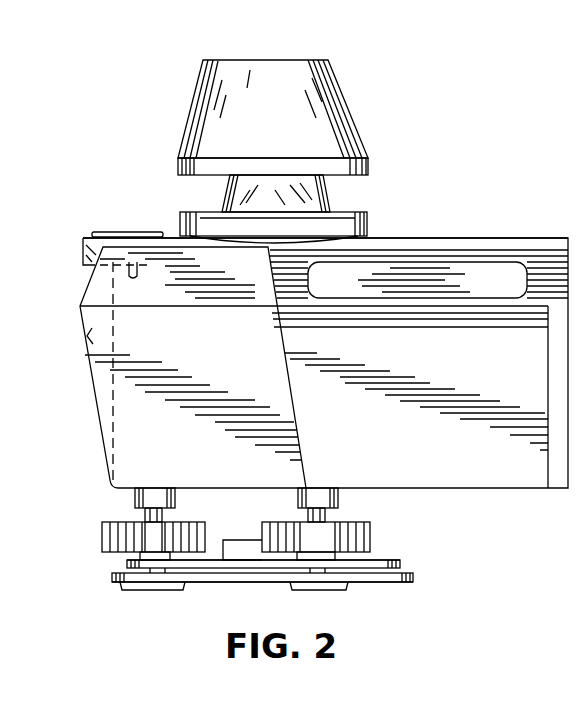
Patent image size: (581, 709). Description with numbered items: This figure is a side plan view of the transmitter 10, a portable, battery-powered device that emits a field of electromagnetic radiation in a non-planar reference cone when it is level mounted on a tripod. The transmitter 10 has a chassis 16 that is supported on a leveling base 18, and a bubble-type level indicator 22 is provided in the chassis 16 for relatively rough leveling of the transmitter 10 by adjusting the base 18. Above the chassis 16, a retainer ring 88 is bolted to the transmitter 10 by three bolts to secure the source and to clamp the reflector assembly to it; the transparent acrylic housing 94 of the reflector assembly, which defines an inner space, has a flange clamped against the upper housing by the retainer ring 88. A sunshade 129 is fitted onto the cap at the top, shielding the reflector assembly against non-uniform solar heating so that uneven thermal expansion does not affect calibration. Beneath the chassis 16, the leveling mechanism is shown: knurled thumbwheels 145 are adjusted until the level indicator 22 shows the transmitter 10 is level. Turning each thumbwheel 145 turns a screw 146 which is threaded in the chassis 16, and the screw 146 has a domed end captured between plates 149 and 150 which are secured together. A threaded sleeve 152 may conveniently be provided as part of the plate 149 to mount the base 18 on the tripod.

The transmitter 10 is at (497, 238).
The chassis 16 is at (549, 238).
The leveling base 18 is at (393, 558).
The bubble-type level indicator 22 is at (117, 235).
The retainer ring 88 is at (366, 224).
The housing 94 is at (326, 190).
The sunshade 129 is at (346, 103).
The knurled thumbwheel 145 is at (203, 514).
The screw 146 is at (145, 521).
The plate 149 is at (400, 564).
The plate 150 is at (413, 580).
The threaded sleeve 152 is at (242, 539).